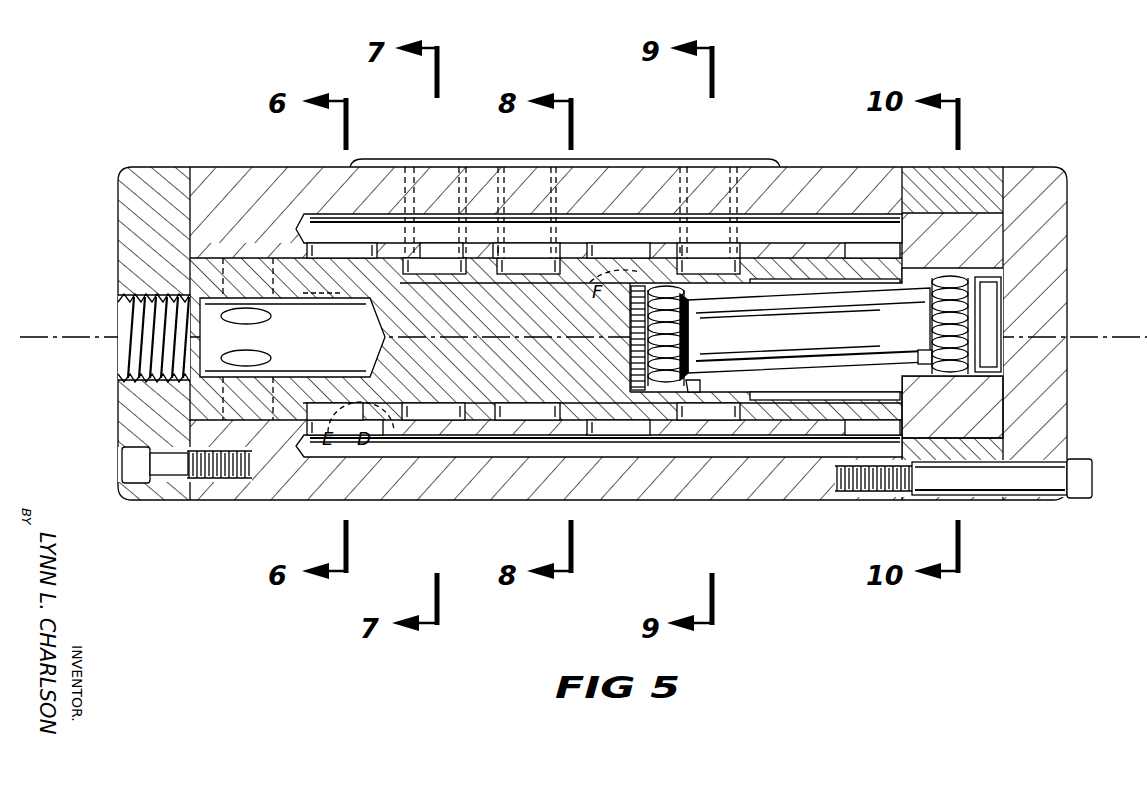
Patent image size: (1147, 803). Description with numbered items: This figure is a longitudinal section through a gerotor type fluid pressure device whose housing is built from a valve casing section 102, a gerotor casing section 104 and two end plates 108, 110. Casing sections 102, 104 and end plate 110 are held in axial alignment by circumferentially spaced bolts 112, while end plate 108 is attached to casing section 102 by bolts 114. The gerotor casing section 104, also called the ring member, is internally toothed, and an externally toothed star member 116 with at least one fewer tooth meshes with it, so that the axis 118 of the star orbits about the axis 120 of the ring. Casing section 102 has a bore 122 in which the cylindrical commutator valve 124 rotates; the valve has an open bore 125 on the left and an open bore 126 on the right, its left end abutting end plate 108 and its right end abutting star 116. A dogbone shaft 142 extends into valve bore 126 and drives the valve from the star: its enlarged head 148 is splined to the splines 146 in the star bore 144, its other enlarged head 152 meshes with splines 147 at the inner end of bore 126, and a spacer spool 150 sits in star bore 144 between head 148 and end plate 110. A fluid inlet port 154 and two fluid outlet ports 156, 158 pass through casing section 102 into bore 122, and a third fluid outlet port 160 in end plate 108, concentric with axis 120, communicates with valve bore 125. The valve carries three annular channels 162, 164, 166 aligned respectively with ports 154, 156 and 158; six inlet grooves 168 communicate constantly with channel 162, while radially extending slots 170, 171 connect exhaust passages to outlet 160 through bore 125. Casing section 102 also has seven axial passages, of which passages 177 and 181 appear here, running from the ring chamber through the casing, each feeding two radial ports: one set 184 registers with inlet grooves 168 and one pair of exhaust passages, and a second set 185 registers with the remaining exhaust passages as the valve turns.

The valve casing section 102 is at (537, 494).
The gerotor casing section 104 is at (975, 180).
The end plate 108 is at (140, 185).
The end plate 110 is at (1052, 190).
The bolts 112 is at (1082, 473).
The bolts 114 is at (124, 464).
The star member 116 is at (990, 422).
The axis of star member 118 is at (1040, 318).
The axis of ring member 120 is at (583, 324).
The bore 122 is at (196, 262).
The commutator valve 124 is at (528, 373).
The open bore 125 is at (340, 297).
The open bore 126 is at (802, 396).
The shaft 142 is at (805, 334).
The bore of star member 144 is at (946, 376).
The splines 146 is at (932, 357).
The splines 147 is at (700, 388).
The enlarged head 148 is at (948, 280).
The spacer spool 150 is at (1002, 358).
The enlarged head 152 is at (672, 324).
The fluid inlet port 154 is at (740, 190).
The fluid outlet port 156 is at (572, 195).
The fluid outlet port 158 is at (448, 185).
The fluid outlet port 160 is at (120, 316).
The annular channel 162 is at (745, 268).
The annular channel 164 is at (514, 277).
The annular channel 166 is at (428, 277).
The grooves 168 is at (585, 278).
The radially extending slot 170 is at (270, 282).
The radially extending slot 171 is at (273, 341).
The axially extending passage 177 is at (808, 221).
The axially extending passage 181 is at (514, 455).
The set of ports 184 is at (607, 278).
The set of ports 185 is at (302, 243).